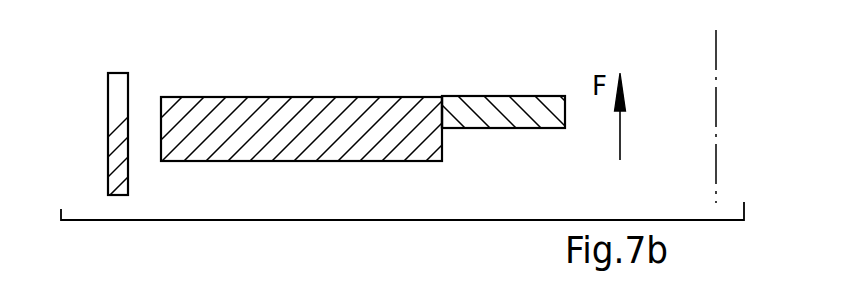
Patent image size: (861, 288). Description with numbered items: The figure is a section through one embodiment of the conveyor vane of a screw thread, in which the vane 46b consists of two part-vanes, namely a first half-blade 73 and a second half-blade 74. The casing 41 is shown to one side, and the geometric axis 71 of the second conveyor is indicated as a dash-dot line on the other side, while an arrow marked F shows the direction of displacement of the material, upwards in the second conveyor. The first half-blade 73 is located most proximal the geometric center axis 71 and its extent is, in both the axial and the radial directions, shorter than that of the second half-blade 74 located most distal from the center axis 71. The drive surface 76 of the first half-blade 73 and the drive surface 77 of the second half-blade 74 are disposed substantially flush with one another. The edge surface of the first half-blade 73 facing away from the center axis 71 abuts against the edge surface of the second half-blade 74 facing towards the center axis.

The casing 41 is at (109, 129).
The second half-blade 74 is at (335, 150).
The first half-blade 73 is at (492, 128).
The drive surface 77 is at (290, 97).
The vane 46b is at (397, 97).
The drive surface 76 is at (522, 94).
The geometric axis 71 is at (717, 128).